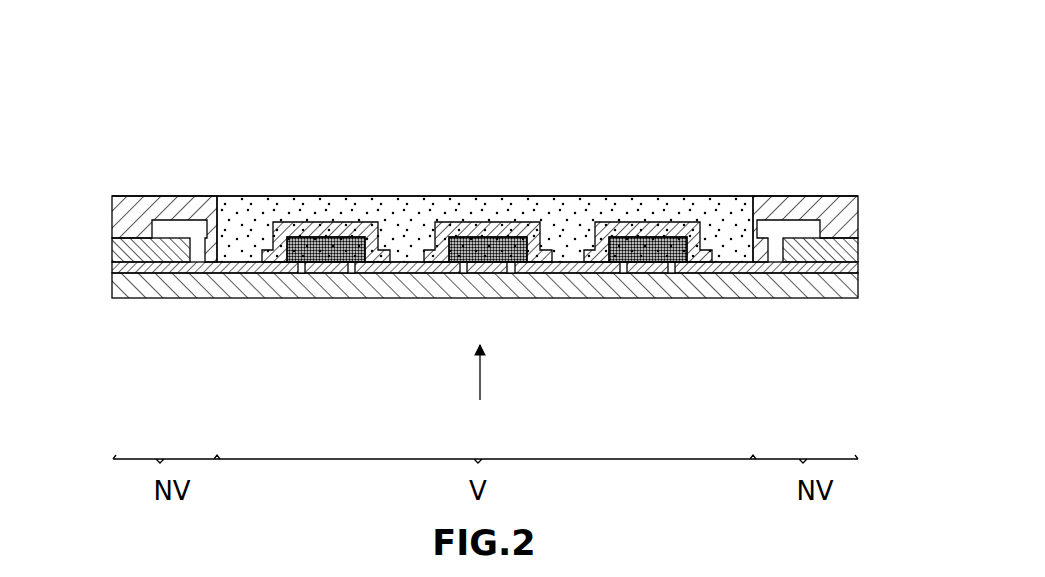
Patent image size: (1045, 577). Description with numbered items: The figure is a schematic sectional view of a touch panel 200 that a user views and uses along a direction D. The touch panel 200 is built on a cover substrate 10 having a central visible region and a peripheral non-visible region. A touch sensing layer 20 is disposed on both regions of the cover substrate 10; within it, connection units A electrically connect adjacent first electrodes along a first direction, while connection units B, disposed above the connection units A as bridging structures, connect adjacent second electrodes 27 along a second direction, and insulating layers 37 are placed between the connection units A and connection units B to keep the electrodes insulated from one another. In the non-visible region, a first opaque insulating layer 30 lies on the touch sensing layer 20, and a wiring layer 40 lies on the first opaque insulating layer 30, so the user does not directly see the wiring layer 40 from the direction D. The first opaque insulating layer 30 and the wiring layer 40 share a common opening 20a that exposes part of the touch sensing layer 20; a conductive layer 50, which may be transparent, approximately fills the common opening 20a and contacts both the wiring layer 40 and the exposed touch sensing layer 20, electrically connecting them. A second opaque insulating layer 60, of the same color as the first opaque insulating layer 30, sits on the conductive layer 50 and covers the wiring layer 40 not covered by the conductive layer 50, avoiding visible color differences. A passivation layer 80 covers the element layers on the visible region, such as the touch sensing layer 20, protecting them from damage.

The touch panel 200 is at (843, 80).
The cover substrate 10 is at (845, 282).
The touch sensing layer 20 is at (114, 268).
The common opening 20a is at (196, 262).
The second electrodes 27 is at (693, 270).
The first opaque insulating layer 30 is at (120, 254).
The insulating layers 37 is at (333, 232).
The wiring layer 40 is at (120, 228).
The conductive layer 50 is at (183, 228).
The second opaque insulating layer 60 is at (137, 200).
The passivation layer 80 is at (405, 210).
The connection units A is at (637, 270).
The connection units B is at (607, 232).
The direction D is at (496, 372).